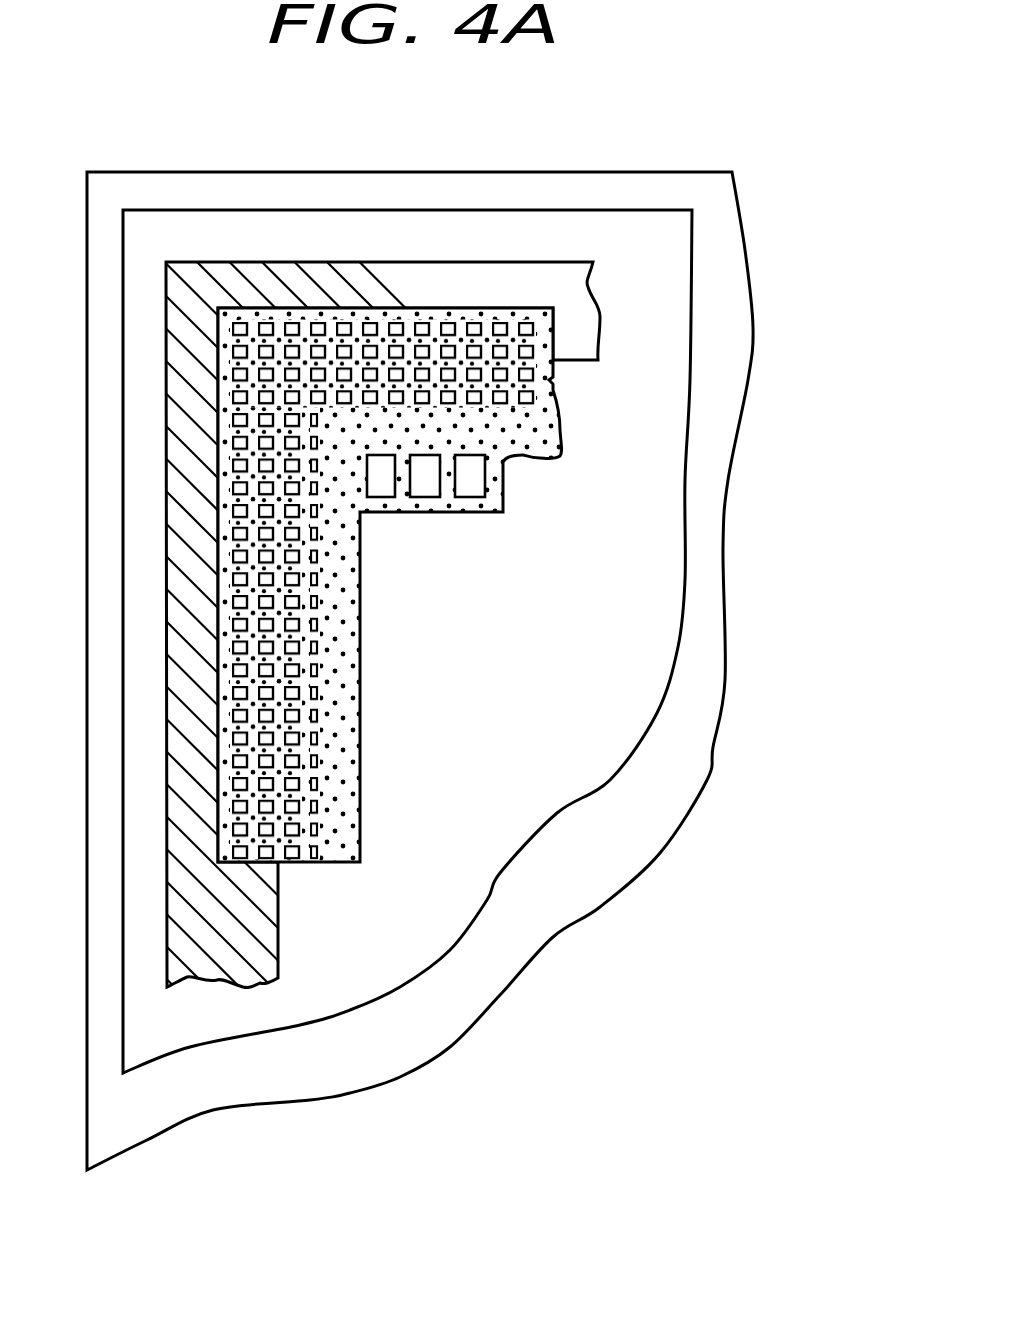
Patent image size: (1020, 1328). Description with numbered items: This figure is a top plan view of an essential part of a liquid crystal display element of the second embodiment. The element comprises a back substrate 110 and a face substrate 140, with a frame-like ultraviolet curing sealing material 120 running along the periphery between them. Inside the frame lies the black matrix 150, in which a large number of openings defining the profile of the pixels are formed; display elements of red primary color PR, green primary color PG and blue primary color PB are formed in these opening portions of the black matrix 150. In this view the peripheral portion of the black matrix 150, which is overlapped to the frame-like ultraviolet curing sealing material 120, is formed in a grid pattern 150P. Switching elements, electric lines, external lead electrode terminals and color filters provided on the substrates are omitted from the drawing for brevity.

The back substrate 110 is at (693, 183).
The face substrate 140 is at (650, 282).
The frame-like ultraviolet curing sealing material 120 is at (207, 955).
The black matrix 150 is at (471, 731).
The grid pattern 150P is at (280, 862).
The red primary color display element PR is at (378, 487).
The green primary color display element PG is at (425, 487).
The blue primary color display element PB is at (470, 487).